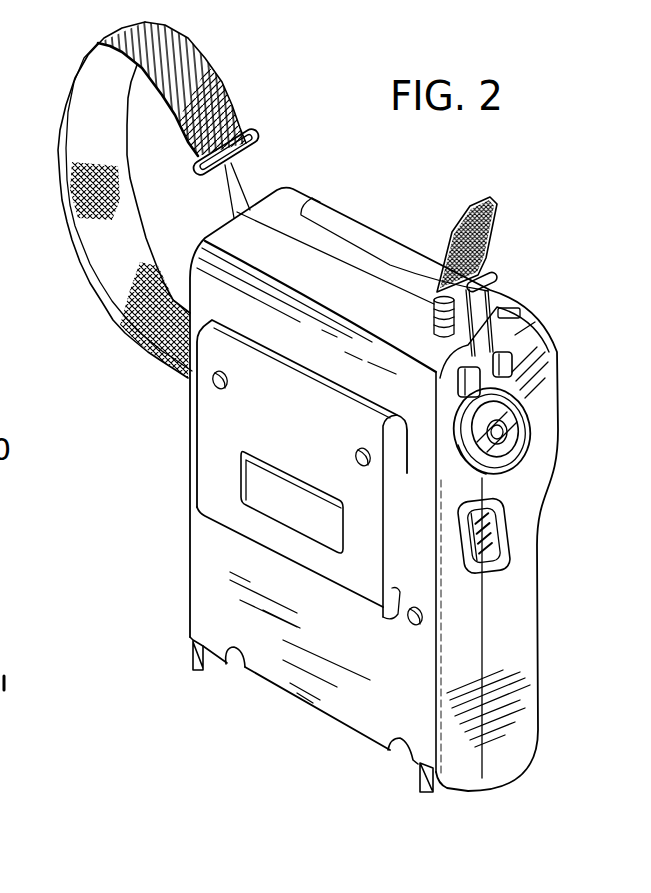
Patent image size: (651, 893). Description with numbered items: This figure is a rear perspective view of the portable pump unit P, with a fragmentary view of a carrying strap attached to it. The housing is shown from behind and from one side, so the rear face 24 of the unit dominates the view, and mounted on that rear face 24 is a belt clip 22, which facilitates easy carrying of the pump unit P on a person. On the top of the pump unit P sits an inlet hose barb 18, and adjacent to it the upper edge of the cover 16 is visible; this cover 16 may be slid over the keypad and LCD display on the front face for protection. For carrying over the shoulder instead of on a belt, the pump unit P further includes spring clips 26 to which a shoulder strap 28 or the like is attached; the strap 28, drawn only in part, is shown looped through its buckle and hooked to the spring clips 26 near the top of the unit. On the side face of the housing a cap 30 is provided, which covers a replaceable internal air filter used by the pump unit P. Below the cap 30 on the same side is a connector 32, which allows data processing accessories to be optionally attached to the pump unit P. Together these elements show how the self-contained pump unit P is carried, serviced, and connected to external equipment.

The pump unit P is at (40, 95).
The cover 16 is at (347, 223).
The inlet hose barb 18 is at (433, 314).
The belt clip 22 is at (212, 452).
The rear face 24 is at (260, 704).
The spring clips 26 is at (493, 348).
The shoulder strap 28 is at (222, 89).
The cap 30 is at (528, 428).
The connector 32 is at (500, 571).